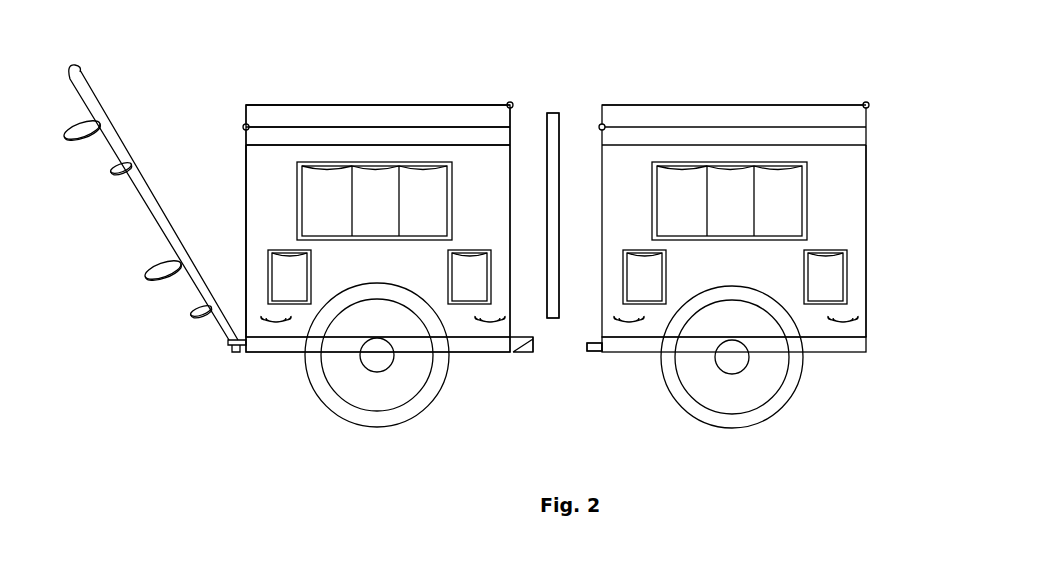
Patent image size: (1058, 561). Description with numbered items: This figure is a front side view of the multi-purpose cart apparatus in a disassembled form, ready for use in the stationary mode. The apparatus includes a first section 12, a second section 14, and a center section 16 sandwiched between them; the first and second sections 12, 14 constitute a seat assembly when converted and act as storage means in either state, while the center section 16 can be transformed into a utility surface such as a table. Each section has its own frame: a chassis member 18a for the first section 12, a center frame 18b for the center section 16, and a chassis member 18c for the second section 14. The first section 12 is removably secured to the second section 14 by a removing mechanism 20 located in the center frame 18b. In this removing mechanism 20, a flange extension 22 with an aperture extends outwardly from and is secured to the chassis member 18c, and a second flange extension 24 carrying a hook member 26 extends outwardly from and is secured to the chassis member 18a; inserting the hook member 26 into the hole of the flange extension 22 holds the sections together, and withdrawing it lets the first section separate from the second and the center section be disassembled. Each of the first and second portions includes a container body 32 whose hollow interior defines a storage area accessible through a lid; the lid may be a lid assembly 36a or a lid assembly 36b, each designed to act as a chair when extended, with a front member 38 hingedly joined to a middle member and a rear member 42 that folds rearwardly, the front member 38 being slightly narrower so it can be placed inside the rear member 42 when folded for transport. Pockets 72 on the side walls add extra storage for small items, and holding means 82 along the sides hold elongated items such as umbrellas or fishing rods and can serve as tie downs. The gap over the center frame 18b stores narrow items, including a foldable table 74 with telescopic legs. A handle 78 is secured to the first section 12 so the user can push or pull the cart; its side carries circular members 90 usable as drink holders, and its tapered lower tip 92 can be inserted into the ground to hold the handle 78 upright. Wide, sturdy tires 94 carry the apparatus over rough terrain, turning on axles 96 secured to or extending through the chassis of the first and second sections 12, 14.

The first section 12 is at (270, 176).
The second section 14 is at (860, 203).
The center section 16 is at (573, 96).
The chassis member 18a is at (359, 90).
The center frame 18b is at (530, 364).
The chassis member 18c is at (656, 349).
The removing mechanism 20 is at (556, 372).
The flange extension 22 is at (592, 352).
The second flange extension 24 is at (513, 338).
The hook member 26 is at (537, 341).
The container body 32 is at (268, 226).
The lid assembly 36a is at (443, 113).
The lid assembly 36b is at (748, 106).
The front member 38 is at (330, 111).
The rear member 42 is at (504, 143).
The pockets 72 is at (797, 216).
The foldable table 74 is at (561, 197).
The handle 78 is at (152, 157).
The holding means 82 is at (858, 322).
The circular members 90 is at (152, 256).
The lower tip 92 is at (241, 360).
The tires 94 is at (357, 393).
The axles 96 is at (740, 368).